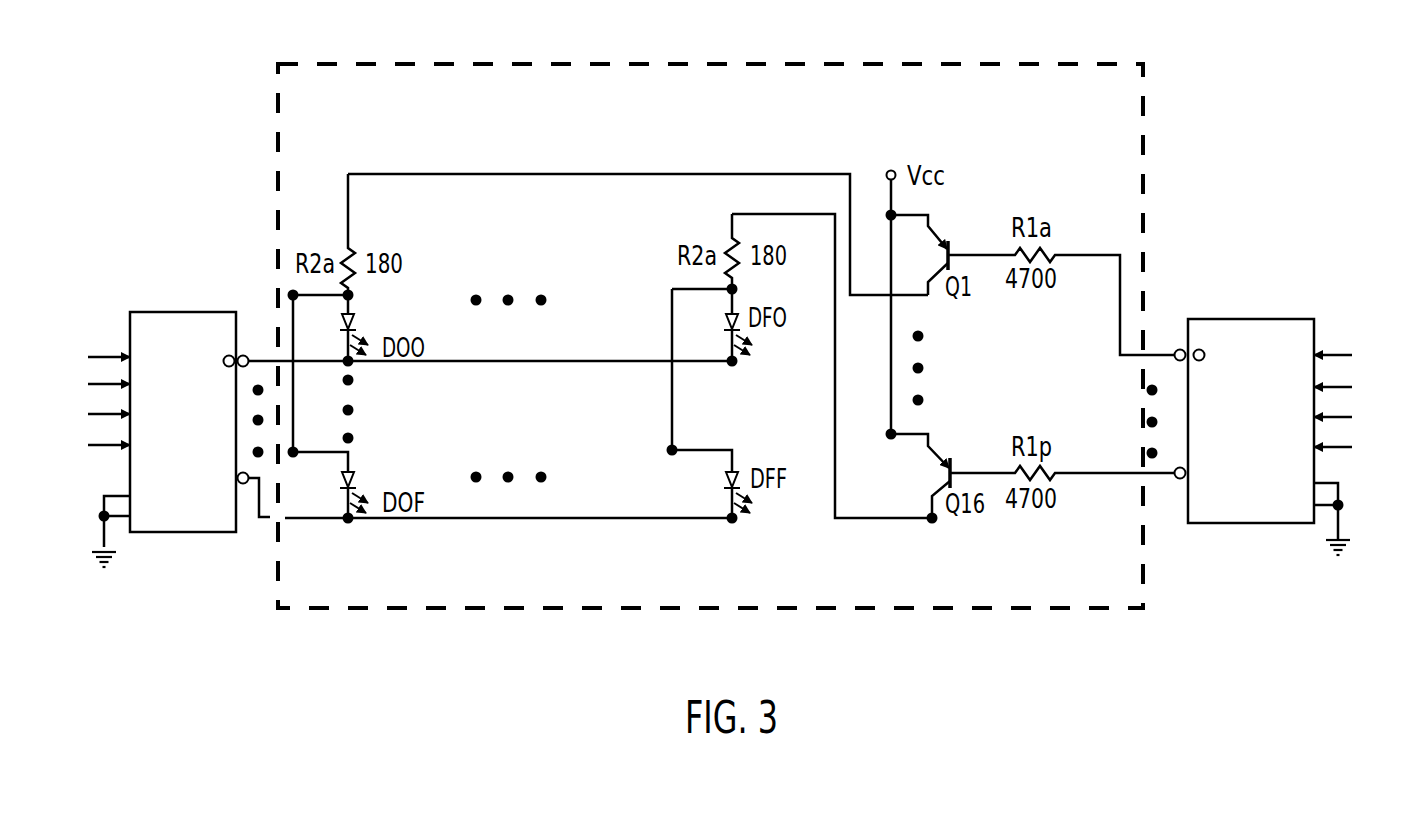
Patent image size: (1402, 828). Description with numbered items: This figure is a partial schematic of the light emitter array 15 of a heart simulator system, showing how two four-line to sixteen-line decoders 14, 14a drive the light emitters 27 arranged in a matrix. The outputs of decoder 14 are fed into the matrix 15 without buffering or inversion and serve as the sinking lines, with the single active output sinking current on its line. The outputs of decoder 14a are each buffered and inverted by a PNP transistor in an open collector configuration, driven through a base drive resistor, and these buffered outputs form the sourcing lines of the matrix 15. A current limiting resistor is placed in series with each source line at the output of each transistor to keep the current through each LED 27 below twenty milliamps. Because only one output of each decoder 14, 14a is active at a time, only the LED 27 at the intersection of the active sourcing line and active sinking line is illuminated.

The light emitter array 15 is at (678, 64).
The decoder 14 is at (156, 439).
The decoder 14a is at (1255, 420).
The light emitter 27 is at (358, 314).